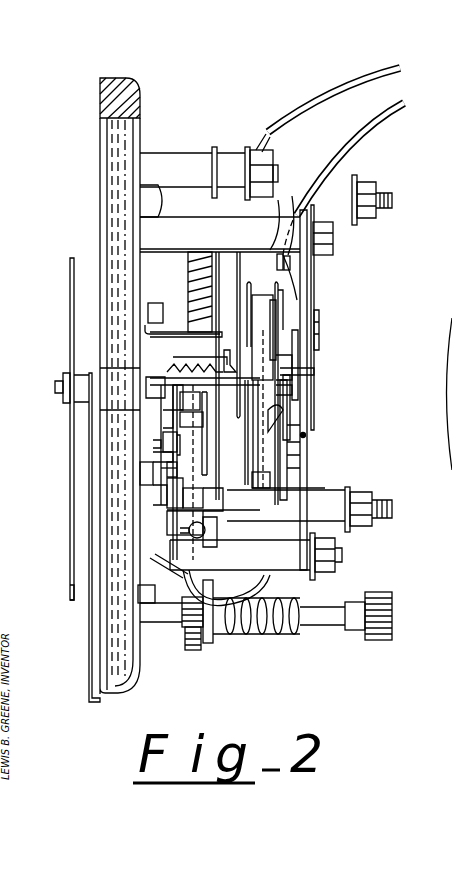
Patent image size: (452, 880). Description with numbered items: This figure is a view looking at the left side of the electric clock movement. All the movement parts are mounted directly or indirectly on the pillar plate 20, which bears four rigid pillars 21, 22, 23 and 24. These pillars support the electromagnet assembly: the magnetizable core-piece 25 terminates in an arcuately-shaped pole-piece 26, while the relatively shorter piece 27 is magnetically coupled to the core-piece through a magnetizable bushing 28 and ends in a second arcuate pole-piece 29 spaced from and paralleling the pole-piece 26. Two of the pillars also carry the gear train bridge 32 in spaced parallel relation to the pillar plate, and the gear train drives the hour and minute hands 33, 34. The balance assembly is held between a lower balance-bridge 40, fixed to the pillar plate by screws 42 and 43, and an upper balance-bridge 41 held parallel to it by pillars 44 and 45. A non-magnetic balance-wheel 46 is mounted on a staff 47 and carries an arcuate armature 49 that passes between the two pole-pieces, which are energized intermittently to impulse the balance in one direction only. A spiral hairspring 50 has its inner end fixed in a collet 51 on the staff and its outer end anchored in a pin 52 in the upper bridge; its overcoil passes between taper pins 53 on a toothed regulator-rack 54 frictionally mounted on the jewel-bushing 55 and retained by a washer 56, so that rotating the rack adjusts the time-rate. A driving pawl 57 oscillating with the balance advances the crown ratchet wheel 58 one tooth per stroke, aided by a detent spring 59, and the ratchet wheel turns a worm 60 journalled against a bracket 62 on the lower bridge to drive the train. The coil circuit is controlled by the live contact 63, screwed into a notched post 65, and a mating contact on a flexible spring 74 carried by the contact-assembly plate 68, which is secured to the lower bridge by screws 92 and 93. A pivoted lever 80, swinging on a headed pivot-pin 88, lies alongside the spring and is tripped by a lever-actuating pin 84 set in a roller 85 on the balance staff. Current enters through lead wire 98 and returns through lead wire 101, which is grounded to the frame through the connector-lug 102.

The pillar plate 20 is at (140, 96).
The pillar 21 is at (394, 202).
The pillar 22 is at (336, 563).
The pillar 23 is at (278, 172).
The pillar 24 is at (393, 512).
The core-piece 25 is at (282, 206).
The pole-piece 26 is at (240, 438).
The shorter piece 27 is at (300, 597).
The magnetizable bushing 28 is at (266, 632).
The pole-piece 29 is at (306, 436).
The gear train bridge 32 is at (214, 147).
The hour hand 33 is at (70, 310).
The minute hand 34 is at (70, 576).
The lower balance-bridge 40 is at (142, 585).
The upper balance-bridge 41 is at (305, 282).
The screw 42 is at (152, 196).
The screw 43 is at (175, 468).
The pillar 44 is at (335, 240).
The pillar 45 is at (343, 556).
The balance-wheel 46 is at (288, 482).
The balance staff 47 is at (316, 372).
The armature 49 is at (284, 298).
The hairspring 50 is at (270, 352).
The collet 51 is at (293, 388).
The pin 52 is at (305, 414).
The taper pins 53 is at (300, 362).
The regulator-rack 54 is at (320, 316).
The jewel-bushing 55 is at (294, 378).
The washer 56 is at (300, 350).
The driving pawl 57 is at (228, 368).
The crown ratchet wheel 58 is at (183, 364).
The detent spring 59 is at (157, 360).
The worm 60 is at (198, 286).
The bracket 62 is at (168, 330).
The live contact 63 is at (217, 545).
The post 65 is at (230, 538).
The contact-assembly plate 68 is at (173, 478).
The contact spring 74 is at (187, 446).
The lever 80 is at (282, 446).
The lever-actuating pin 84 is at (163, 428).
The roller 85 is at (173, 397).
The pivot-pin 88 is at (258, 474).
The screw 92 is at (160, 443).
The screw 93 is at (172, 457).
The lead wire 98 is at (368, 128).
The lead wire 101 is at (340, 92).
The connector-lug 102 is at (262, 140).